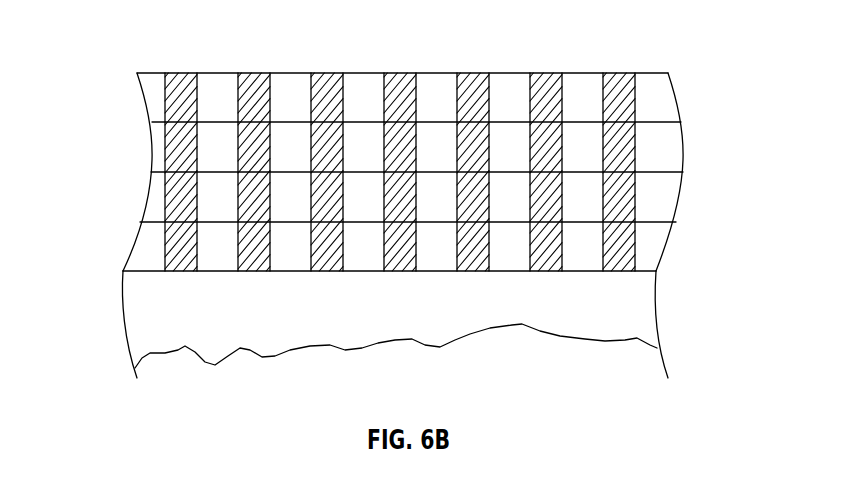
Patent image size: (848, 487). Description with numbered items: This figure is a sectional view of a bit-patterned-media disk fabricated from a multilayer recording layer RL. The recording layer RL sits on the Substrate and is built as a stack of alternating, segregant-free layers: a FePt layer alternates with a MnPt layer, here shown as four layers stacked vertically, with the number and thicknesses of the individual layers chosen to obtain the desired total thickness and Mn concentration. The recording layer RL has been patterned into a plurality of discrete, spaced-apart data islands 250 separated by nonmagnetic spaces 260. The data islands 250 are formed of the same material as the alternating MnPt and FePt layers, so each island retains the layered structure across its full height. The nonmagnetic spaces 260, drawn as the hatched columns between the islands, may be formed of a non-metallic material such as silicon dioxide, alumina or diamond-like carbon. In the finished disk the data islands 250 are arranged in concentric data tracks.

The data islands 250 is at (210, 83).
The nonmagnetic spaces 260 is at (180, 82).
The recording layer RL is at (85, 73).
The substrate Substrate is at (395, 324).
The FePt layer FePt is at (665, 107).
The MnPt layer MnPt is at (664, 152).